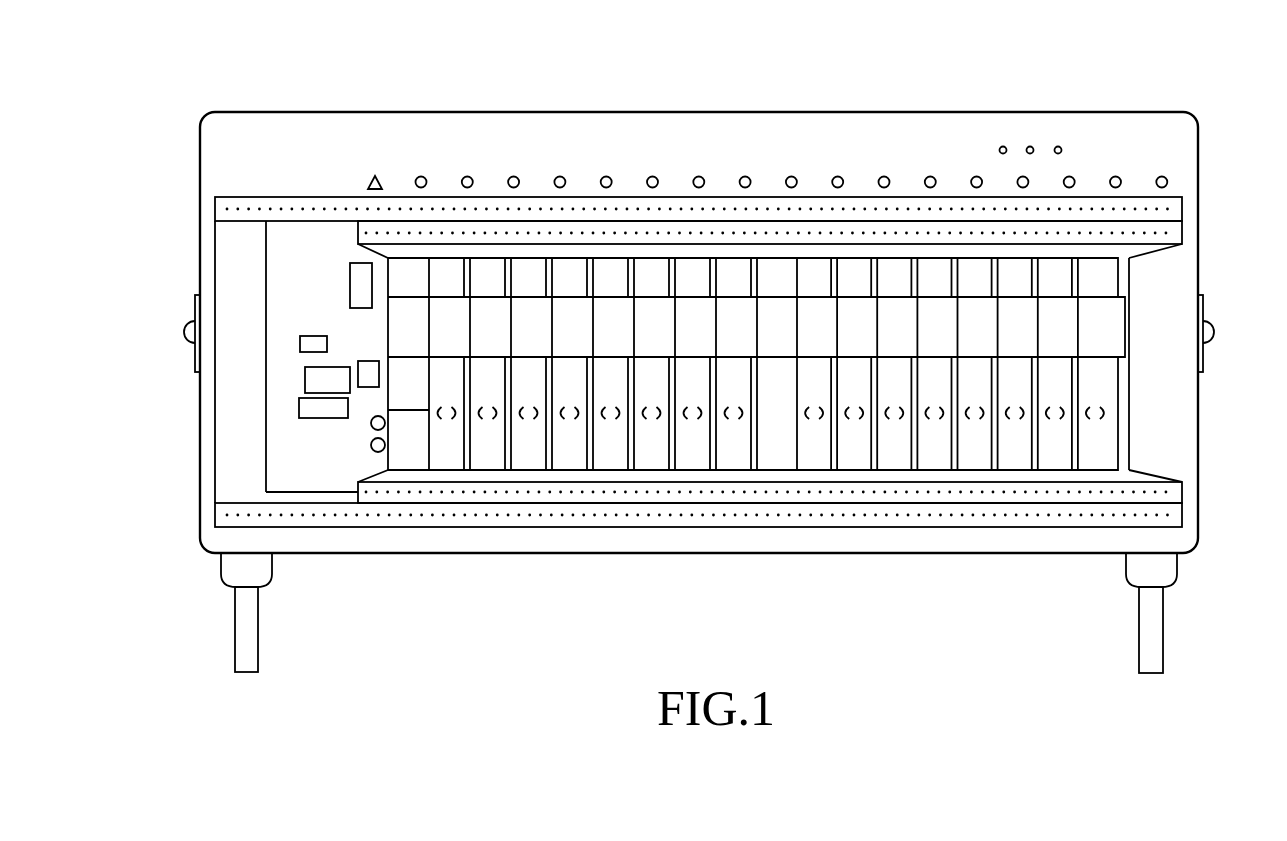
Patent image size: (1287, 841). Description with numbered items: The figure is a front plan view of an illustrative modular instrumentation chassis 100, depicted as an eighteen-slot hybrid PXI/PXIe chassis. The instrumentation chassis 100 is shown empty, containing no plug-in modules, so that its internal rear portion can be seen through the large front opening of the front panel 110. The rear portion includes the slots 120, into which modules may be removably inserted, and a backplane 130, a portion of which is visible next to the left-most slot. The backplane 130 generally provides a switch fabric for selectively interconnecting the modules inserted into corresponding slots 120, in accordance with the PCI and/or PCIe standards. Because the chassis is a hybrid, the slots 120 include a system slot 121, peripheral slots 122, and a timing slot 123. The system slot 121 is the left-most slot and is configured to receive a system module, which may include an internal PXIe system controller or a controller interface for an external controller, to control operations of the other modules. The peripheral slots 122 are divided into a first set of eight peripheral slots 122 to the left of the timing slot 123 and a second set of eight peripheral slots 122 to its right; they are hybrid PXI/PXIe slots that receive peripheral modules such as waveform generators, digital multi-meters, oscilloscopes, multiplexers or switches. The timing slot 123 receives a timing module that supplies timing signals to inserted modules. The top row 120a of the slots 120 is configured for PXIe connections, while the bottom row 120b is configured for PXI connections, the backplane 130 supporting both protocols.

The instrumentation chassis 100 is at (521, 41).
The front panel 110 is at (223, 157).
The slots 120 is at (388, 100).
The top row of the slots 120a is at (1140, 278).
The bottom row of the slots 120b is at (1144, 420).
The system slot 121 is at (413, 393).
The peripheral slots 122 is at (750, 559).
The timing slot 123 is at (778, 468).
The backplane 130 is at (312, 283).